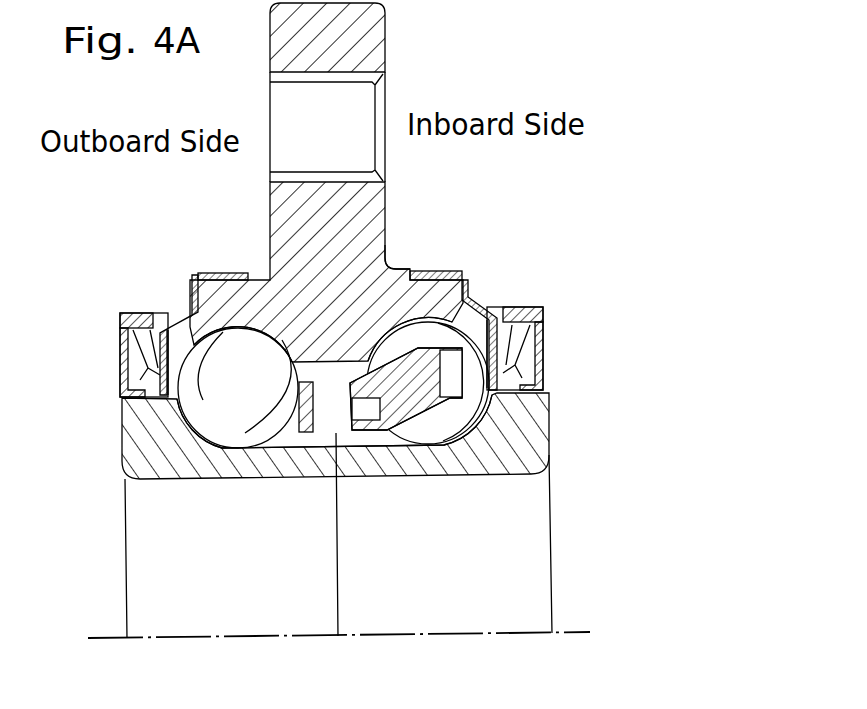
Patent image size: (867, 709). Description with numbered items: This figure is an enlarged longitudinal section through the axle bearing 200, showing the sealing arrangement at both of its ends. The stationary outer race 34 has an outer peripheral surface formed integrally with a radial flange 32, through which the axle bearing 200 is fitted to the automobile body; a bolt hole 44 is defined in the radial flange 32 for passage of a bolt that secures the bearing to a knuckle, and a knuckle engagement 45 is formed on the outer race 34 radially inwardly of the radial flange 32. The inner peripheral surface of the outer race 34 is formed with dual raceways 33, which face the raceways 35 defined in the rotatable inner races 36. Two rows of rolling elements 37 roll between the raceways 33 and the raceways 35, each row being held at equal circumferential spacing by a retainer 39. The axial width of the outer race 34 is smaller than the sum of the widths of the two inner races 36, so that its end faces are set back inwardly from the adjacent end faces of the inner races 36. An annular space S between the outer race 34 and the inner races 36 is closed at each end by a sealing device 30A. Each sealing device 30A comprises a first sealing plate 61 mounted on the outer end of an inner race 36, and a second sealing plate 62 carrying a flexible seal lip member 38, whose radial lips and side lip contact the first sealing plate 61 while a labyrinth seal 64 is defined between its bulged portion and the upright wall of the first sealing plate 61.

The radial flange 32 is at (372, 52).
The bolt hole 44 is at (297, 117).
The knuckle engagement 45 is at (398, 262).
The outer race 34 is at (290, 283).
The rolling elements 37 is at (200, 407).
The raceways 33 is at (220, 402).
The raceways 35 is at (163, 480).
The inner races 36 is at (255, 479).
The retainer 39 is at (382, 440).
The second sealing plate 62 is at (193, 300).
The sealing device 30A is at (107, 353).
The seal lip member 38 is at (135, 312).
The labyrinth seal 64 is at (106, 329).
The first sealing plate 61 is at (127, 375).
The annular space S is at (187, 340).
The axle bearing 200 is at (318, 494).